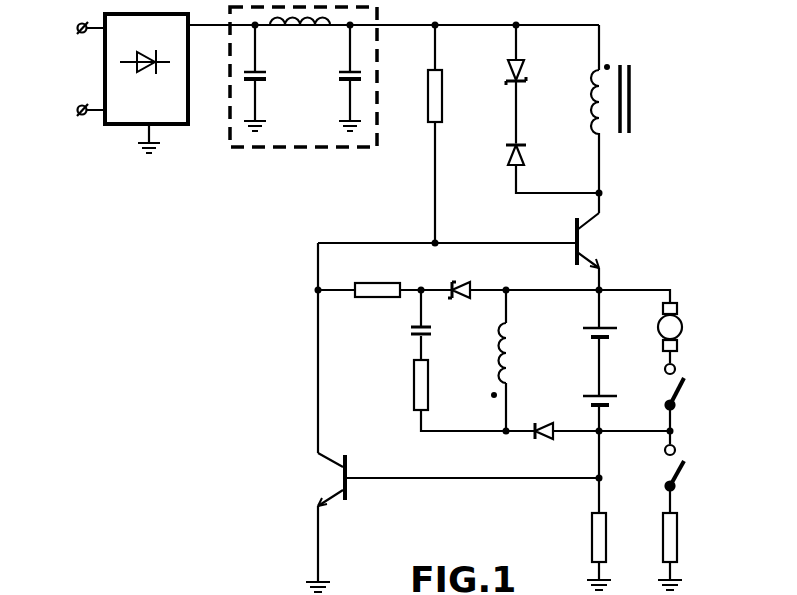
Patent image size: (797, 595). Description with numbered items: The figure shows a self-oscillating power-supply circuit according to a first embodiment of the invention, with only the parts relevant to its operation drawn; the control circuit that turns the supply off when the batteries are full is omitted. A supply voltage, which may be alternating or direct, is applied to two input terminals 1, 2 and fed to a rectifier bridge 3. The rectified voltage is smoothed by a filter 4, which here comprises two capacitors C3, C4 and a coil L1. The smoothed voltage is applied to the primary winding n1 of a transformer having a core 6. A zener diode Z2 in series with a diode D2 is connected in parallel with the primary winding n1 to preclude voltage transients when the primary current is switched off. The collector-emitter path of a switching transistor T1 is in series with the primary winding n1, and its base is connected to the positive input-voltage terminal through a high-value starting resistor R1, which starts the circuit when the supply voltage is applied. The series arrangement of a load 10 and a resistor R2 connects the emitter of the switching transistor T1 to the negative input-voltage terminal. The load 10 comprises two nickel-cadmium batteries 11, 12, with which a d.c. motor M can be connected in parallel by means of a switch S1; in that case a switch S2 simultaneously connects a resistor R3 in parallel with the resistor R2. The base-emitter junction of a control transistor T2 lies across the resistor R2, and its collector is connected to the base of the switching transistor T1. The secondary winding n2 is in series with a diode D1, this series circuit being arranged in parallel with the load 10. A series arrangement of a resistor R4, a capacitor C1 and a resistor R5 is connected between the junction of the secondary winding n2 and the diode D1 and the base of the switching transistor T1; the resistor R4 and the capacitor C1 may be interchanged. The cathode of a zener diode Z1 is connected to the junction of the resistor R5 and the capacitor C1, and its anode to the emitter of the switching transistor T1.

The input terminal 1 is at (84, 33).
The input terminal 2 is at (84, 115).
The rectifier bridge 3 is at (176, 124).
The filter 4 is at (248, 148).
The core 6 is at (640, 80).
The load 10 is at (606, 354).
The nickel-cadmium battery 11 is at (594, 326).
The nickel-cadmium battery 12 is at (596, 394).
The coil L1 is at (278, 22).
The capacitor C3 is at (262, 82).
The capacitor C4 is at (340, 82).
The resistor R1 is at (442, 95).
The zener diode Z2 is at (522, 72).
The diode D2 is at (524, 157).
The primary winding n1 is at (598, 108).
The switching transistor T1 is at (585, 240).
The resistor R5 is at (383, 281).
The zener diode Z1 is at (462, 282).
The capacitor C1 is at (410, 333).
The resistor R4 is at (414, 380).
The secondary winding n2 is at (502, 352).
The diode D1 is at (545, 422).
The d.c. motor M is at (684, 327).
The switch S1 is at (686, 396).
The switch S2 is at (686, 476).
The control transistor T2 is at (339, 478).
The resistor R2 is at (606, 530).
The resistor R3 is at (677, 530).